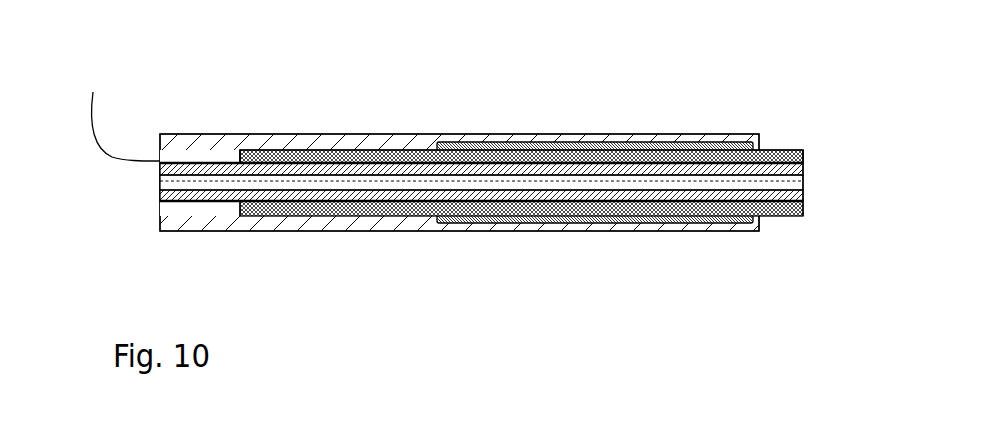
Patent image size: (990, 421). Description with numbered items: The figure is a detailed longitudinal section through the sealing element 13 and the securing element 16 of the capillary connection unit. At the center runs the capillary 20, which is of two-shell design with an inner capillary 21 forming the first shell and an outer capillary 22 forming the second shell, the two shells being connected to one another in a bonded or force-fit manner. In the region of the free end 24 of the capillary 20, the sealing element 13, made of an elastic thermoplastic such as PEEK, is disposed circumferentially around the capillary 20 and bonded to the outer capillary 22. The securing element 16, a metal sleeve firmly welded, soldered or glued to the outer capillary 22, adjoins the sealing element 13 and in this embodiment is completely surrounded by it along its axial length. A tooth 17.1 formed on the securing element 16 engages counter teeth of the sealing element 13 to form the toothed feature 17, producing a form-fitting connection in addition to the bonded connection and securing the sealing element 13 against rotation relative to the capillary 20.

The sealing element 13 is at (240, 138).
The securing element 16 is at (595, 147).
The toothed feature 17 is at (470, 229).
The tooth 17.1 is at (453, 146).
The capillary 20 is at (542, 108).
The inner capillary 21 is at (803, 172).
The outer capillary 22 is at (803, 155).
The free end 24 is at (109, 103).